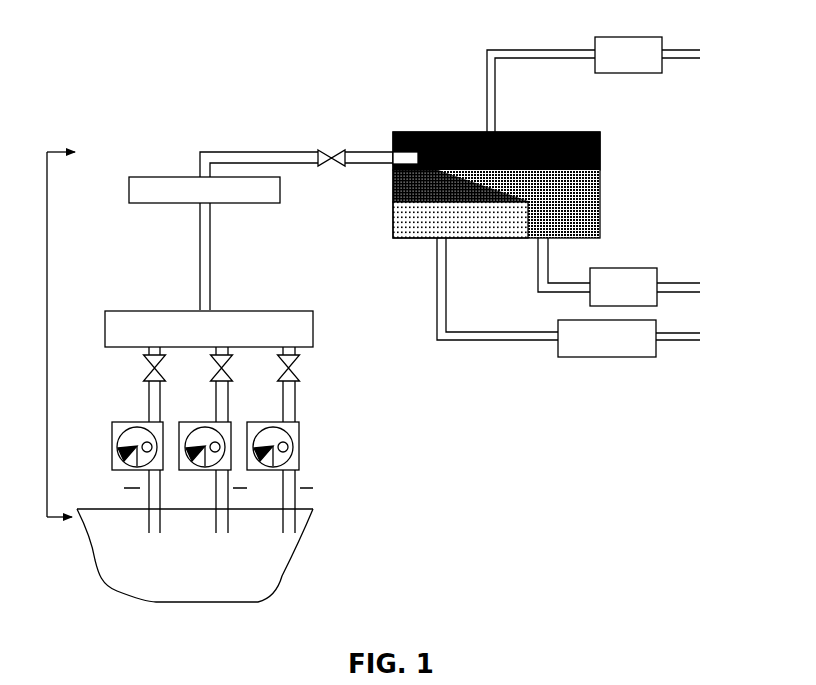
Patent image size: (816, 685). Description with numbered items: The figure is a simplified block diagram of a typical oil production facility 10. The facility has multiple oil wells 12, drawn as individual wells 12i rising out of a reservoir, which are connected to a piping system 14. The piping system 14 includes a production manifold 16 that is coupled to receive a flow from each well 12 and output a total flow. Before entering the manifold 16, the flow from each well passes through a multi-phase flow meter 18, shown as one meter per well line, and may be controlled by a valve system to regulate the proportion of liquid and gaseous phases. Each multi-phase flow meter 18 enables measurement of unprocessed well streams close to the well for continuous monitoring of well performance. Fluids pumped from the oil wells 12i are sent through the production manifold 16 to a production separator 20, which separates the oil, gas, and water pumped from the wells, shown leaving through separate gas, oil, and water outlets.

The oil production facility 10 is at (124, 47).
The oil wells 12 is at (280, 567).
The oil wells 12i is at (140, 535).
The piping system 14 is at (46, 335).
The production manifold 16 is at (313, 327).
The multi-phase flow meter 18 is at (299, 428).
The production separator 20 is at (600, 180).